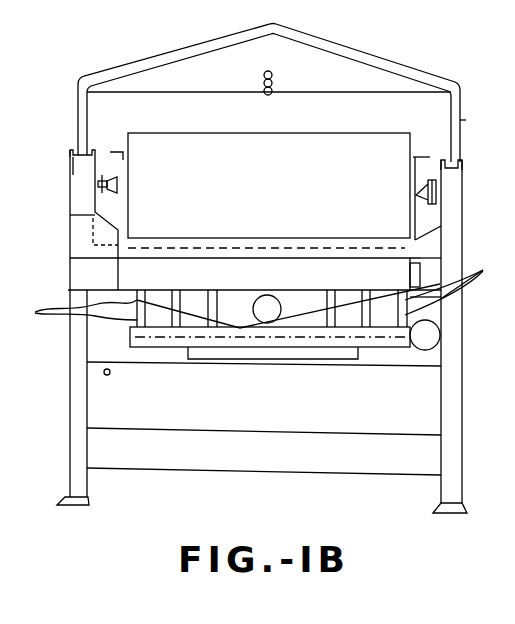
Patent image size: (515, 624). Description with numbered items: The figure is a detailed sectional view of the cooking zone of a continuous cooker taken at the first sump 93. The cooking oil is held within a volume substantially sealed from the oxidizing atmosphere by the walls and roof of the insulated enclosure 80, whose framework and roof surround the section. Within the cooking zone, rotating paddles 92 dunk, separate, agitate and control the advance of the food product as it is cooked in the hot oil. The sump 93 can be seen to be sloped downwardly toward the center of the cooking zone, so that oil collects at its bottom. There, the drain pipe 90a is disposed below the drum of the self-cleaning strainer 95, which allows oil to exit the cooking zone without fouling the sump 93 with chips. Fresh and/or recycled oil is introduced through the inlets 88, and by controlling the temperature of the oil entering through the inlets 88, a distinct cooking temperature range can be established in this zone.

The insulated enclosure 80 is at (95, 212).
The inlet 88 is at (260, 290).
The exit pipe 90a is at (243, 330).
The rotating paddles 92 is at (355, 133).
The sump 93 is at (297, 300).
The self-cleaning strainer 95 is at (168, 238).